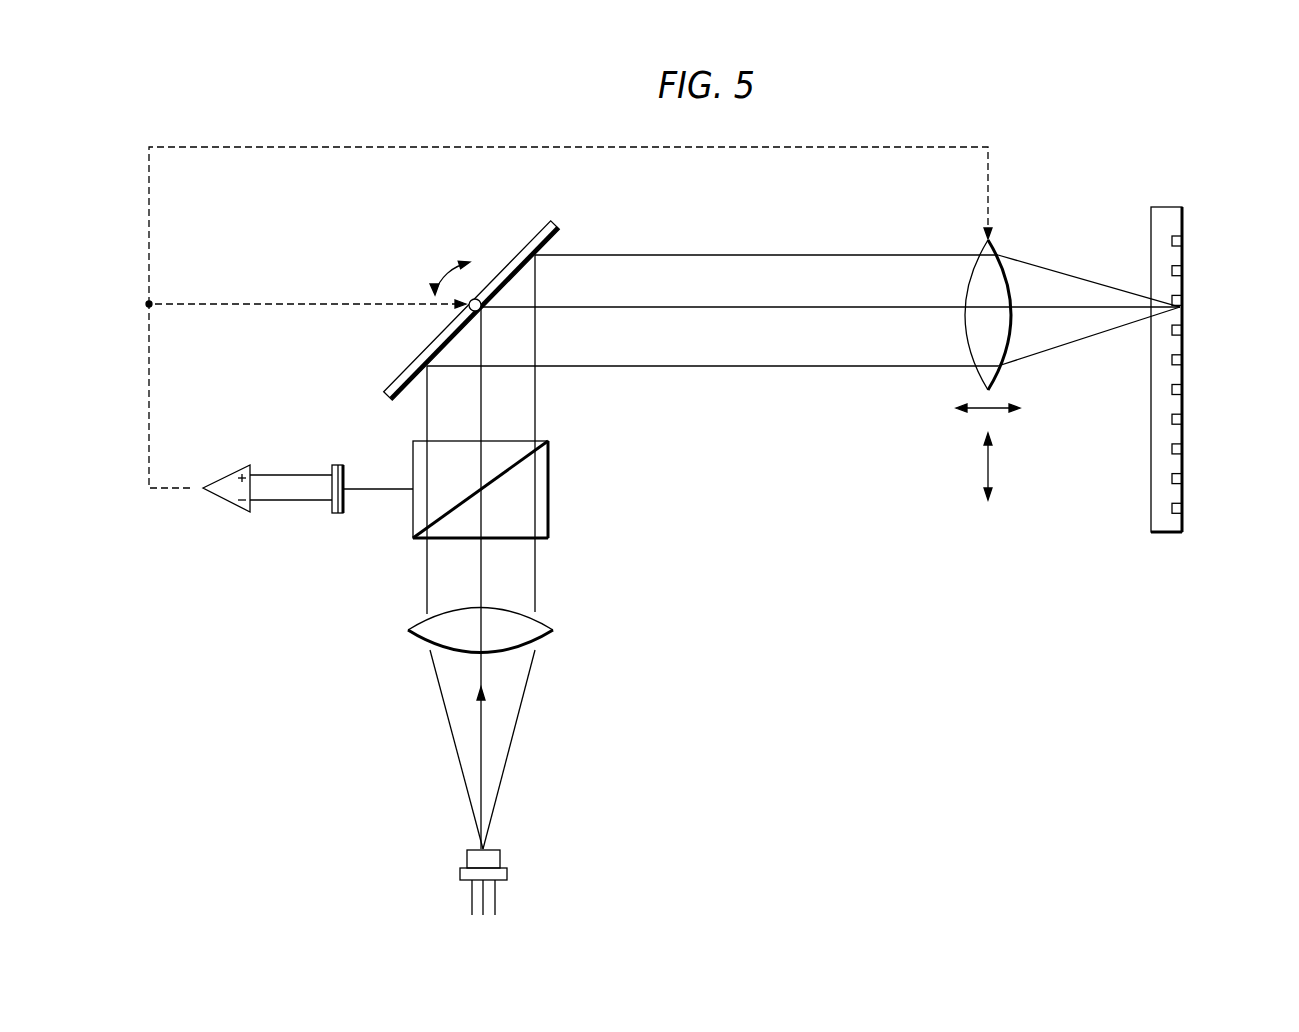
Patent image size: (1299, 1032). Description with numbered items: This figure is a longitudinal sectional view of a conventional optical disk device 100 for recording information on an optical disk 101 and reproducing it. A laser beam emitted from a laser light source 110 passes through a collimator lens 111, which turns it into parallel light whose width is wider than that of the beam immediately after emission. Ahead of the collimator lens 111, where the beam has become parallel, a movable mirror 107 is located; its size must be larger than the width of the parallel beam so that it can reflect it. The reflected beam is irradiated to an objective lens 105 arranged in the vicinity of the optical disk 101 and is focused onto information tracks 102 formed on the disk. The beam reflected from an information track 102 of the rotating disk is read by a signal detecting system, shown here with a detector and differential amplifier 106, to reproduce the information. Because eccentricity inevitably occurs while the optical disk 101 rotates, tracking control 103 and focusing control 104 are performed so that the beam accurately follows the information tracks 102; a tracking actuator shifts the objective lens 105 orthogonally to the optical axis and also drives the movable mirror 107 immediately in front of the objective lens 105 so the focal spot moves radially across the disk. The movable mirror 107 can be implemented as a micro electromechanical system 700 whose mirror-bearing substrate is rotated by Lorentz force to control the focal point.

The optical information recording/reproducing apparatus 100 is at (1097, 137).
The optical disk 101 is at (1207, 348).
The information tracks 102 is at (1182, 320).
The tracking control 103 is at (293, 304).
The focusing control 104 is at (313, 131).
The objective lens 105 is at (998, 255).
The differential amplifier with photodetector 106 is at (232, 470).
The movable mirror 107 is at (518, 258).
The laser light source 110 is at (500, 860).
The collimator lens 111 is at (547, 622).
The micro electromechanical system 700 is at (498, 283).